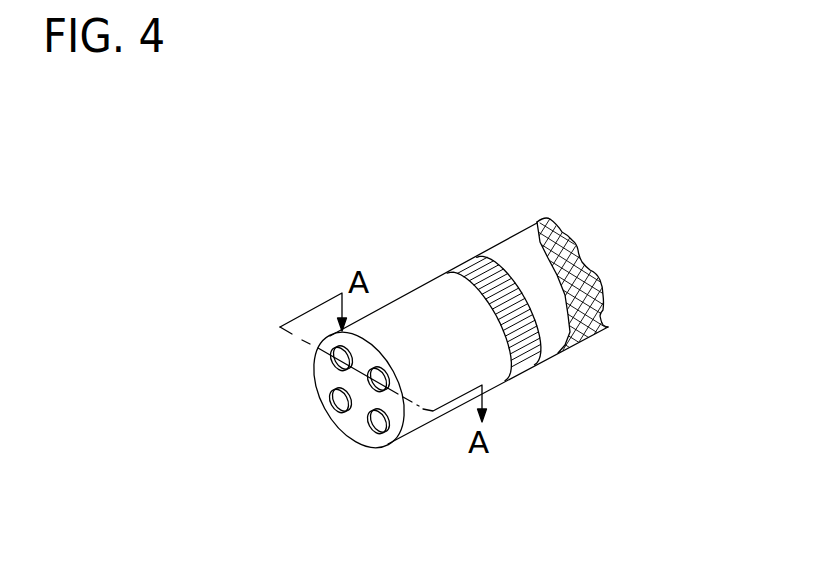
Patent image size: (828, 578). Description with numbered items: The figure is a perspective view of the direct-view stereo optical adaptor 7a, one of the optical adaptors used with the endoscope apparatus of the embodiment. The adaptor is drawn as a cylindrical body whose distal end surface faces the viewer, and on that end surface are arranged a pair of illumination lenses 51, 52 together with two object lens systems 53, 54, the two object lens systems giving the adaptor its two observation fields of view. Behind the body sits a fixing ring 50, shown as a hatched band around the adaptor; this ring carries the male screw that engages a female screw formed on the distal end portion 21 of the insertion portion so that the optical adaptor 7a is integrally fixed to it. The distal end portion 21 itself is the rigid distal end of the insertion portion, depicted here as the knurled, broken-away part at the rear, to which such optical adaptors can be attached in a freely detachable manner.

The stereo optical adaptor 7a is at (465, 244).
The fixing ring 50 is at (522, 347).
The distal end portion 21 is at (604, 357).
The illumination lens 51 is at (339, 415).
The illumination lens 52 is at (377, 431).
The object lens system 53 is at (338, 346).
The object lens system 54 is at (382, 368).